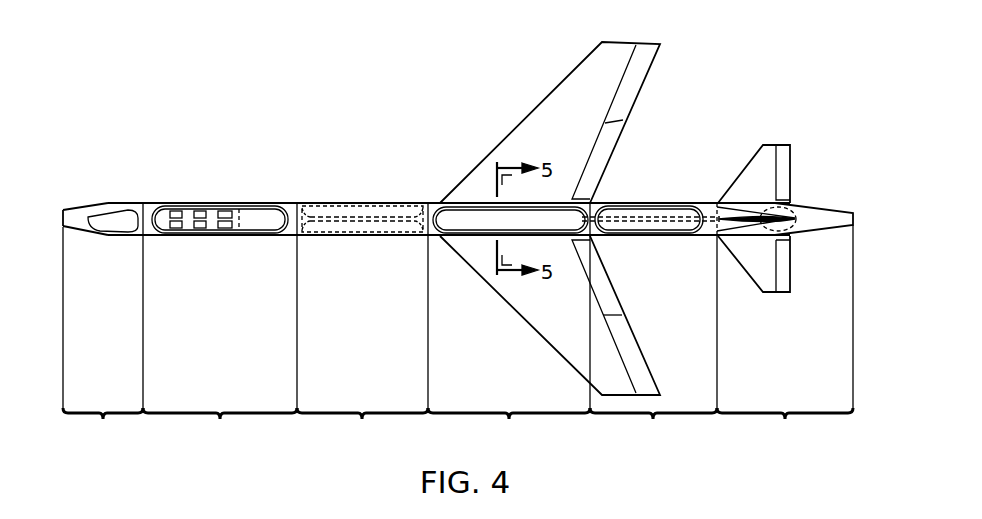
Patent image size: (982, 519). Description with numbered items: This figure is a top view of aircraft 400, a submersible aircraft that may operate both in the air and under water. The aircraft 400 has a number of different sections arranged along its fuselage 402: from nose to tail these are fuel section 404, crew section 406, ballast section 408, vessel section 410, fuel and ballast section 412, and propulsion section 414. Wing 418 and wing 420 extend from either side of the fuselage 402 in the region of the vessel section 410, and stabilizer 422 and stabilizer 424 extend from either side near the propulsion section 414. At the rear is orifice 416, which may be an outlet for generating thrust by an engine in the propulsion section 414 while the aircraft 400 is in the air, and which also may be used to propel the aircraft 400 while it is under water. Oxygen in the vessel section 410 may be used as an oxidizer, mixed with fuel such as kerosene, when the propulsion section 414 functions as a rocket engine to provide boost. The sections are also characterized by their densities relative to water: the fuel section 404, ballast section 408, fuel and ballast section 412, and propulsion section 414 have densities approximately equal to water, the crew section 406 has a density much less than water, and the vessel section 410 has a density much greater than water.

The aircraft 400 is at (149, 202).
The fuselage 402 is at (247, 202).
The fuel section 404 is at (103, 338).
The crew section 406 is at (220, 342).
The ballast section 408 is at (362, 342).
The vessel section 410 is at (509, 342).
The fuel and ballast section 412 is at (653, 343).
The propulsion section 414 is at (785, 337).
The orifice 416 is at (855, 213).
The wing 418 is at (522, 122).
The wing 420 is at (522, 318).
The stabilizer 422 is at (771, 145).
The stabilizer 424 is at (771, 293).